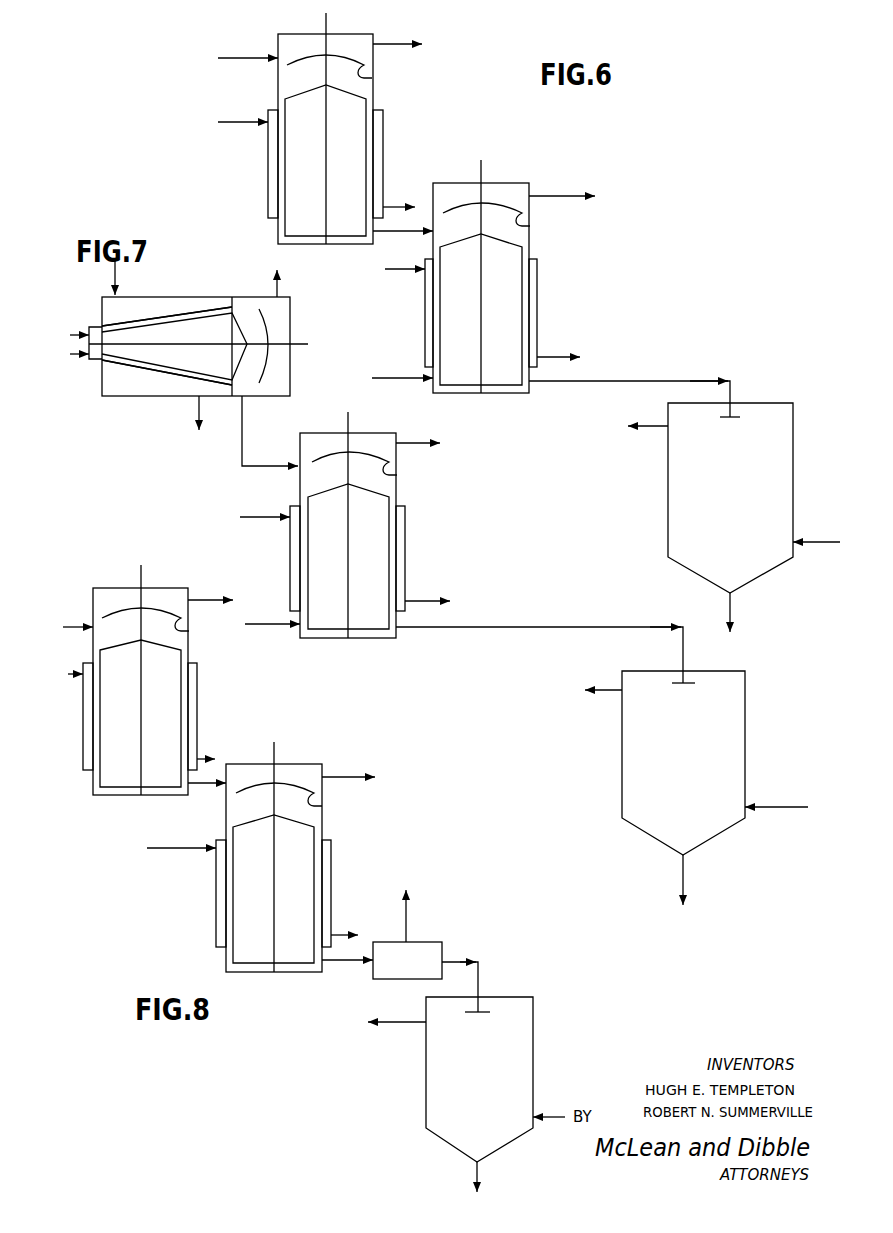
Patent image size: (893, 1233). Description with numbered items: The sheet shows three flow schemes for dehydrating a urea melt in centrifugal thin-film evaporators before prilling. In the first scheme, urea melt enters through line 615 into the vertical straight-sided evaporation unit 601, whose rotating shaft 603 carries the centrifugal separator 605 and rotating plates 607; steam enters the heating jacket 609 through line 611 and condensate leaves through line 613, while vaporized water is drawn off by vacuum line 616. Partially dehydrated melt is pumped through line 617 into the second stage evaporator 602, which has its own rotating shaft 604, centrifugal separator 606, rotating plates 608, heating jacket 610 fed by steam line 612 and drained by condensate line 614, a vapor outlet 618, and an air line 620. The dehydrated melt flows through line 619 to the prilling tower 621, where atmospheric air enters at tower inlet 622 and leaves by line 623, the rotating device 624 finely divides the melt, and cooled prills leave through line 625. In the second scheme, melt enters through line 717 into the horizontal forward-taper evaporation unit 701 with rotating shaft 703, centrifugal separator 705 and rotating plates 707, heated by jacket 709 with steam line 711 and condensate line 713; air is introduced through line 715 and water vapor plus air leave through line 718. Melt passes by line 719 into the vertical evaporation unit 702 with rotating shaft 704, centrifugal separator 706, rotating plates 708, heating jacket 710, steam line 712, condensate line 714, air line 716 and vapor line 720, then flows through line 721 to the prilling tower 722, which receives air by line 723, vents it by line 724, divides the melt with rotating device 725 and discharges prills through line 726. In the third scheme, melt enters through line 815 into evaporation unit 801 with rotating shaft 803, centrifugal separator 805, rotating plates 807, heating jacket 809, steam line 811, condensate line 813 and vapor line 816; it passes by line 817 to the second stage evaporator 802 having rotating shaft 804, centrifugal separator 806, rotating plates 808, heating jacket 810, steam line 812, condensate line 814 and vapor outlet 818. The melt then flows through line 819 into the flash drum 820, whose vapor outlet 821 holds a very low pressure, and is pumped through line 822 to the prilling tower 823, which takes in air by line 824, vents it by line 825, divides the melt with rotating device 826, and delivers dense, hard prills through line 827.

In FIG. 6, the vertical straight-sided centrifugal thin-film evaporation unit 601 is at (375, 34).
In FIG. 6, the second stage evaporator 602 is at (465, 183).
In FIG. 6, the rotating shaft 603 is at (326, 26).
In FIG. 6, the rotating shaft 604 is at (481, 174).
In FIG. 6, the centrifugal separator 605 is at (350, 69).
In FIG. 6, the centrifugal separator 606 is at (507, 216).
In FIG. 6, the rotating plates 607 is at (318, 170).
In FIG. 6, the rotating plates 608 is at (474, 330).
In FIG. 6, the heating jacket 609 is at (383, 157).
In FIG. 6, the heating jacket 610 is at (537, 330).
In FIG. 6, the steam line 611 is at (245, 122).
In FIG. 6, the steam line 612 is at (400, 269).
In FIG. 6, the condensate line 613 is at (410, 197).
In FIG. 6, the condensate line 614 is at (555, 357).
In FIG. 6, the urea melt feed line 615 is at (243, 58).
In FIG. 6, the vapor outlet line 616 is at (398, 44).
In FIG. 6, the transfer line 617 is at (412, 234).
In FIG. 6, the vapor outlet 618 is at (560, 196).
In FIG. 6, the dehydrated urea line 619 is at (668, 364).
In FIG. 6, the air line 620 is at (394, 378).
In FIG. 6, the prilling tower 621 is at (668, 508).
In FIG. 6, the tower air inlet 622 is at (836, 530).
In FIG. 6, the air removal line 623 is at (648, 422).
In FIG. 6, the rotating device 624 is at (738, 417).
In FIG. 6, the prill removal line 625 is at (730, 606).
In FIG. 7, the horizontal forward taper centrifugal thin-film evaporation unit 701 is at (208, 297).
In FIG. 7, the vertical straight-sided centrifugal thin-film evaporation unit 702 is at (396, 497).
In FIG. 7, the rotating shaft 703 is at (300, 344).
In FIG. 7, the rotating shaft 704 is at (348, 422).
In FIG. 7, the centrifugal separator 705 is at (262, 383).
In FIG. 7, the centrifugal separator 706 is at (374, 469).
In FIG. 7, the rotating plates 707 is at (221, 337).
In FIG. 7, the rotating plates 708 is at (339, 569).
In FIG. 7, the heating jacket 709 is at (168, 311).
In FIG. 7, the heating jacket 710 is at (290, 558).
In FIG. 7, the steam line 711 is at (115, 285).
In FIG. 7, the steam line 712 is at (260, 517).
In FIG. 7, the condensate line 713 is at (199, 404).
In FIG. 7, the condensate line 714 is at (428, 601).
In FIG. 7, the air line 715 is at (73, 354).
In FIG. 7, the air line 716 is at (255, 624).
In FIG. 7, the urea melt feed line 717 is at (73, 335).
In FIG. 7, the vapor outlet line 718 is at (272, 280).
In FIG. 7, the transfer line 719 is at (279, 465).
In FIG. 7, the vapor outlet line 720 is at (415, 443).
In FIG. 7, the dehydrated urea line 721 is at (535, 627).
In FIG. 7, the prilling tower 722 is at (622, 768).
In FIG. 7, the air inlet line 723 is at (775, 807).
In FIG. 7, the air removal line 724 is at (598, 694).
In FIG. 7, the rotating device 725 is at (693, 683).
In FIG. 7, the prill removal line 726 is at (683, 866).
In FIG. 8, the vertical straight-sided centrifugal thin-film evaporation unit 801 is at (184, 576).
In FIG. 8, the second stage evaporator 802 is at (312, 764).
In FIG. 8, the rotating shaft 803 is at (140, 576).
In FIG. 8, the rotating shaft 804 is at (274, 755).
In FIG. 8, the centrifugal separator 805 is at (165, 622).
In FIG. 8, the centrifugal separator 806 is at (299, 797).
In FIG. 8, the rotating plates 807 is at (132, 733).
In FIG. 8, the rotating plates 808 is at (266, 897).
In FIG. 8, the heating jacket 809 is at (197, 718).
In FIG. 8, the heating jacket 810 is at (216, 900).
In FIG. 8, the steam line 811 is at (82, 652).
In FIG. 8, the steam line 812 is at (180, 848).
In FIG. 8, the condensate line 813 is at (202, 759).
In FIG. 8, the condensate line 814 is at (340, 935).
In FIG. 8, the urea melt feed line 815 is at (83, 617).
In FIG. 8, the vapor outlet line 816 is at (226, 590).
In FIG. 8, the transfer line 817 is at (206, 785).
In FIG. 8, the vapor outlet 818 is at (362, 777).
In FIG. 8, the dehydrated urea line 819 is at (352, 962).
In FIG. 8, the flash drum 820 is at (416, 970).
In FIG. 8, the vapor outlet 821 is at (406, 922).
In FIG. 8, the molten urea line 822 is at (480, 974).
In FIG. 8, the prilling tower 823 is at (426, 1080).
In FIG. 8, the air inlet line 824 is at (555, 1117).
In FIG. 8, the air removal line 825 is at (385, 1024).
In FIG. 8, the rotating device 826 is at (486, 1012).
In FIG. 8, the prill removal line 827 is at (477, 1168).